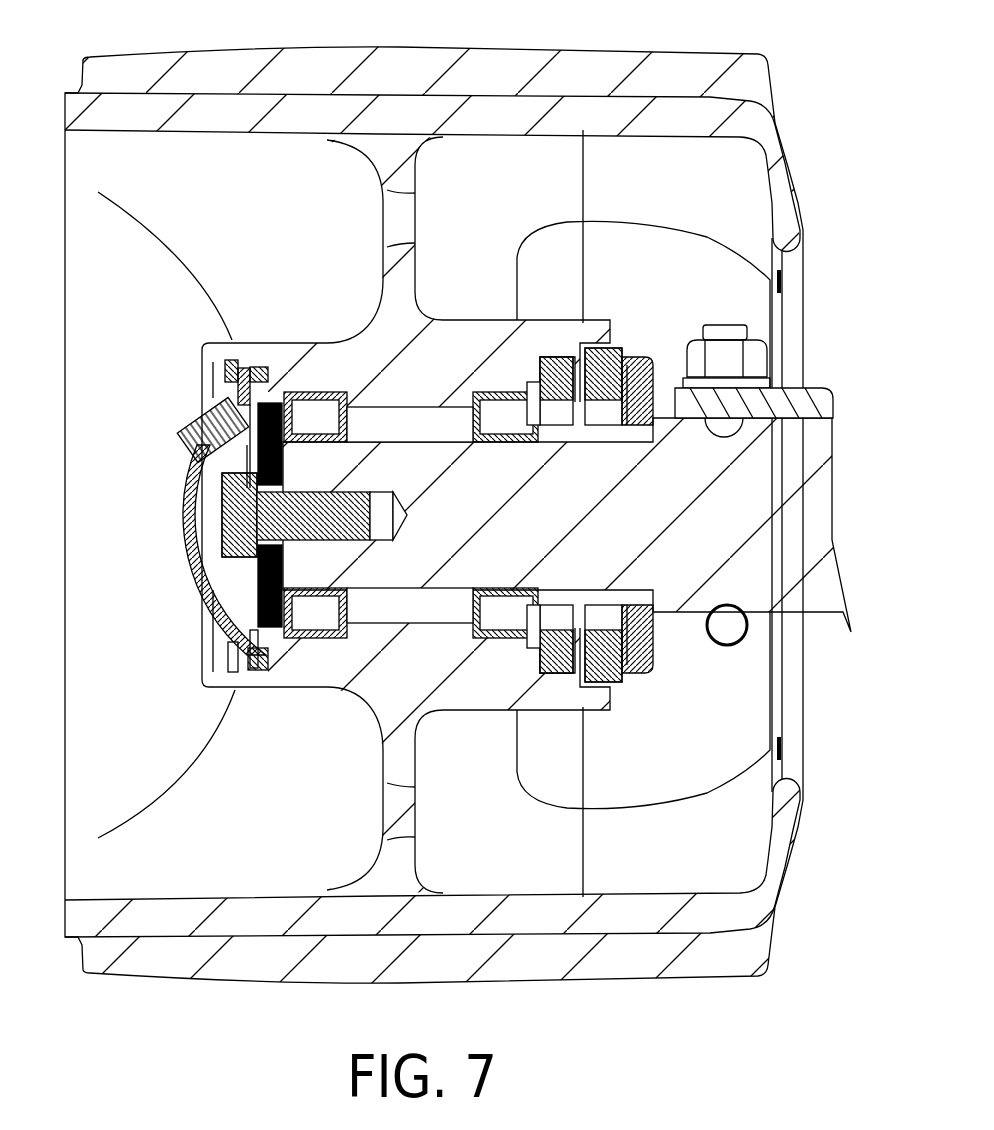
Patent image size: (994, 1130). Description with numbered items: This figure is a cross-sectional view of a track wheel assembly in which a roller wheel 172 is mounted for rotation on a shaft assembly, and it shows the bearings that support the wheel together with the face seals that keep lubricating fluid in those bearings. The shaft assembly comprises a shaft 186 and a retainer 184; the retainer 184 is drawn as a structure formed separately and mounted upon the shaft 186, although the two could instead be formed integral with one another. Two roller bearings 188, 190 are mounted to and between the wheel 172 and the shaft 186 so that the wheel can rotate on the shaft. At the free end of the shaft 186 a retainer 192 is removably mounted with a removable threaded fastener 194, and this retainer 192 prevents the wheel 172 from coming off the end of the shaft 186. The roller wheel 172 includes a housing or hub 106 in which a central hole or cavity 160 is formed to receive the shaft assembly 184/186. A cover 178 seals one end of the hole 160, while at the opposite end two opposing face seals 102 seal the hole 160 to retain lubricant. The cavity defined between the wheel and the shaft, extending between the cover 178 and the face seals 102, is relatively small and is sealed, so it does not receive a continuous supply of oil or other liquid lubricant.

The roller wheel 172 is at (400, 45).
The housing or hub 106 is at (377, 703).
The shaft 186 is at (800, 537).
The removable threaded fastener 194 is at (250, 520).
The retainer 192 is at (262, 570).
The cover 178 is at (185, 493).
The roller bearing 188 is at (303, 358).
The face seal 102 is at (557, 360).
The retainer 184 is at (630, 343).
The roller bearing 190 is at (490, 640).
The central hole or cavity 160 is at (375, 420).